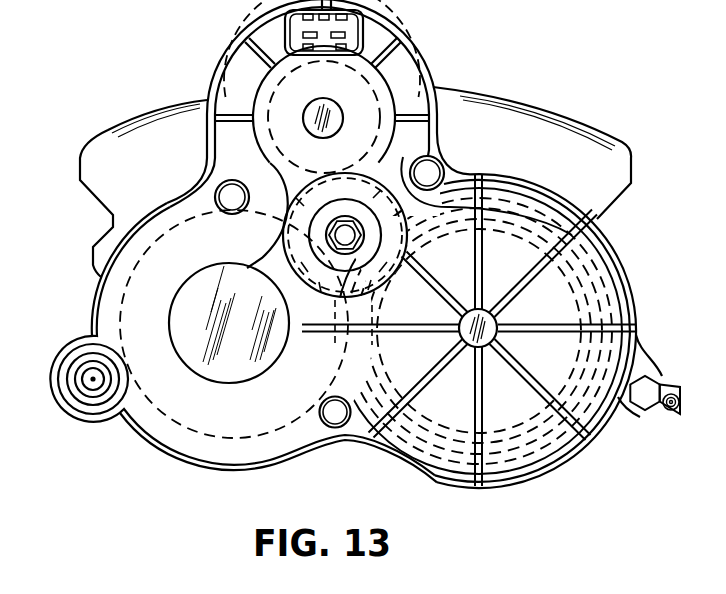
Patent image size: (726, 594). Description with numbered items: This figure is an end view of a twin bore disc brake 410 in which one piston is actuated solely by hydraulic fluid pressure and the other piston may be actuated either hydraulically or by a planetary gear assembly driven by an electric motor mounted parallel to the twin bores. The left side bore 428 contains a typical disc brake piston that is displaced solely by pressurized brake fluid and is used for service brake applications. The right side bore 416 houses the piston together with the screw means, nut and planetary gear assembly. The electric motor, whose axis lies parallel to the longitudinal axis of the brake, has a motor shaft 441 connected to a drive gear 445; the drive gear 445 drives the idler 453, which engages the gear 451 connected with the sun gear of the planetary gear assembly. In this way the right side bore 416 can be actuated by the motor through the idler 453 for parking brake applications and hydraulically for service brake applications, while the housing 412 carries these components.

The twin bore disc brake 410 is at (452, 25).
The housing 412 is at (517, 102).
The right side bore 416 is at (616, 253).
The left side bore 428 is at (118, 303).
The motor shaft 441 is at (303, 113).
The drive gear 445 is at (376, 98).
The gear 451 is at (583, 302).
The idler 453 is at (361, 176).